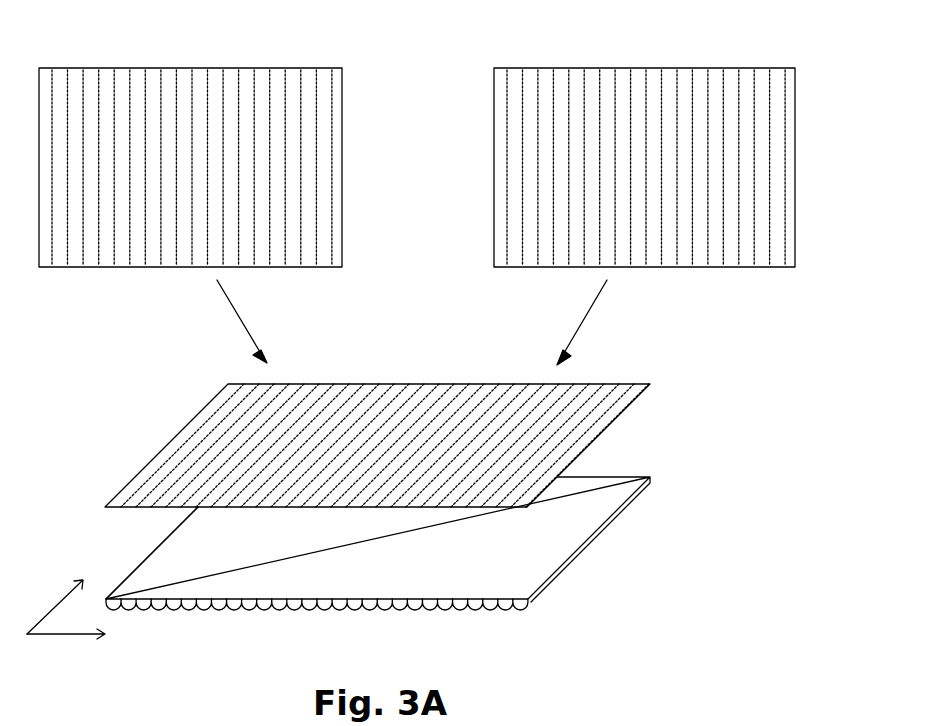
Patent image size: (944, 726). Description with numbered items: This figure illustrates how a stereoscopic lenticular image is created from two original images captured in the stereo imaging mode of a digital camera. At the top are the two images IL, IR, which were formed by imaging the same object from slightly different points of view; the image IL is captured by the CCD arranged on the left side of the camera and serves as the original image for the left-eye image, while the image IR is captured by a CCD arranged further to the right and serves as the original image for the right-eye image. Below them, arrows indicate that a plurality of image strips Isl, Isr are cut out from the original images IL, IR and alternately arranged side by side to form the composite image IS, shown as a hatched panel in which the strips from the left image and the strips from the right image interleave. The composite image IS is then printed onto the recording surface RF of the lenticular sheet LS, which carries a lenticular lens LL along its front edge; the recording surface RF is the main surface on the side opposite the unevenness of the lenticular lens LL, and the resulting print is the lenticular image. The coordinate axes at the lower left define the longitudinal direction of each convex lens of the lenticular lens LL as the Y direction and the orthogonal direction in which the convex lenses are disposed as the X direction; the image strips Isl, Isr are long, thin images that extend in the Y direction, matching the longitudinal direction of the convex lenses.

The image IL is at (275, 68).
The image IR is at (590, 68).
The composite image IS is at (178, 433).
The image strip Isl is at (393, 384).
The image strip Isr is at (403, 385).
The lenticular sheet LS is at (390, 564).
The lenticular lens LL is at (356, 625).
The recording surface RF is at (178, 553).
The X direction X is at (75, 636).
The Y direction Y is at (55, 596).